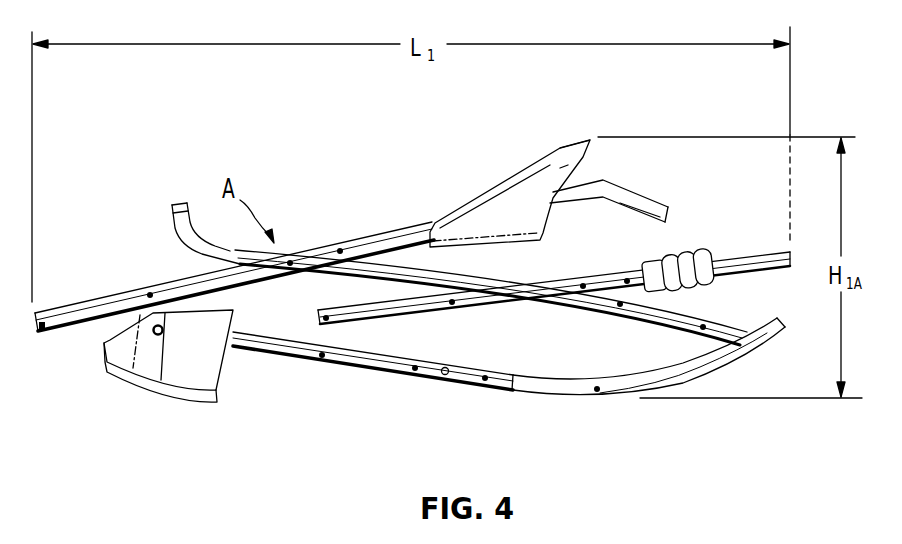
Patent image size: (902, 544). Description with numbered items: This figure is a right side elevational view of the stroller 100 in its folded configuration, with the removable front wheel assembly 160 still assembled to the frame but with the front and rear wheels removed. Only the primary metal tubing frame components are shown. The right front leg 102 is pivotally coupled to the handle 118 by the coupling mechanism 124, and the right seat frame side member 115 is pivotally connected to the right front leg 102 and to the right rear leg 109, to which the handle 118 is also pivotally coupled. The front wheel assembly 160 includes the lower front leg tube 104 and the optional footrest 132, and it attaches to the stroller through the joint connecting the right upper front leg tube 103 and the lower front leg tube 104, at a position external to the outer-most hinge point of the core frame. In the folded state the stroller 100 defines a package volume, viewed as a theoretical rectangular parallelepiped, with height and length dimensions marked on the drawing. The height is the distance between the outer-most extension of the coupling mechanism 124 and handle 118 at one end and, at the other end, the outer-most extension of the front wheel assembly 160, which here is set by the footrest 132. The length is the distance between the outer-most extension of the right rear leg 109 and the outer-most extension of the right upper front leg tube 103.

The stroller 100 is at (634, 397).
The right front leg 102 is at (247, 209).
The right upper front leg tube 103 is at (234, 274).
The lower front leg tube 104 is at (625, 189).
The right rear leg 109 is at (491, 303).
The right seat frame side member 115 is at (554, 276).
The handle 118 is at (373, 391).
The coupling mechanism 124 is at (165, 382).
The footrest 132 is at (495, 193).
The front wheel assembly 160 is at (535, 120).